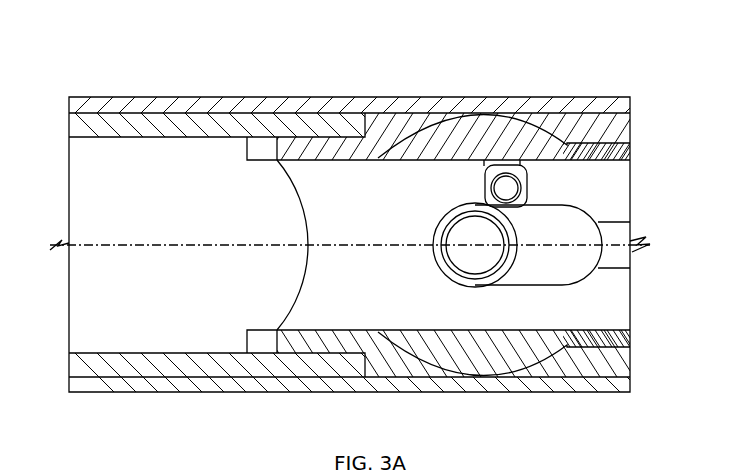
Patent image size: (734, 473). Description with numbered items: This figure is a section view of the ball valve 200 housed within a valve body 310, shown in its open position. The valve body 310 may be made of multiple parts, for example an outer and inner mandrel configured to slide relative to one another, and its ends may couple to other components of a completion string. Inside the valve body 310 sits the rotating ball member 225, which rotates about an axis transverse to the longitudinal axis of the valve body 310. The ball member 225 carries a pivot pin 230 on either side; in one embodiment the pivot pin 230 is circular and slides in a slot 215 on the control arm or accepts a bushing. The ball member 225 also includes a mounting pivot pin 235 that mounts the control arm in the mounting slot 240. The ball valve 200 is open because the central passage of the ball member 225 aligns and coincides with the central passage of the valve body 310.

The ball valve 200 is at (377, 82).
The valve body 310 is at (168, 110).
The rotating ball member 225 is at (484, 112).
The slot 215 is at (528, 197).
The pivot pin 230 is at (486, 184).
The mounting pivot pin 235 is at (455, 240).
The mounting slot 240 is at (587, 278).